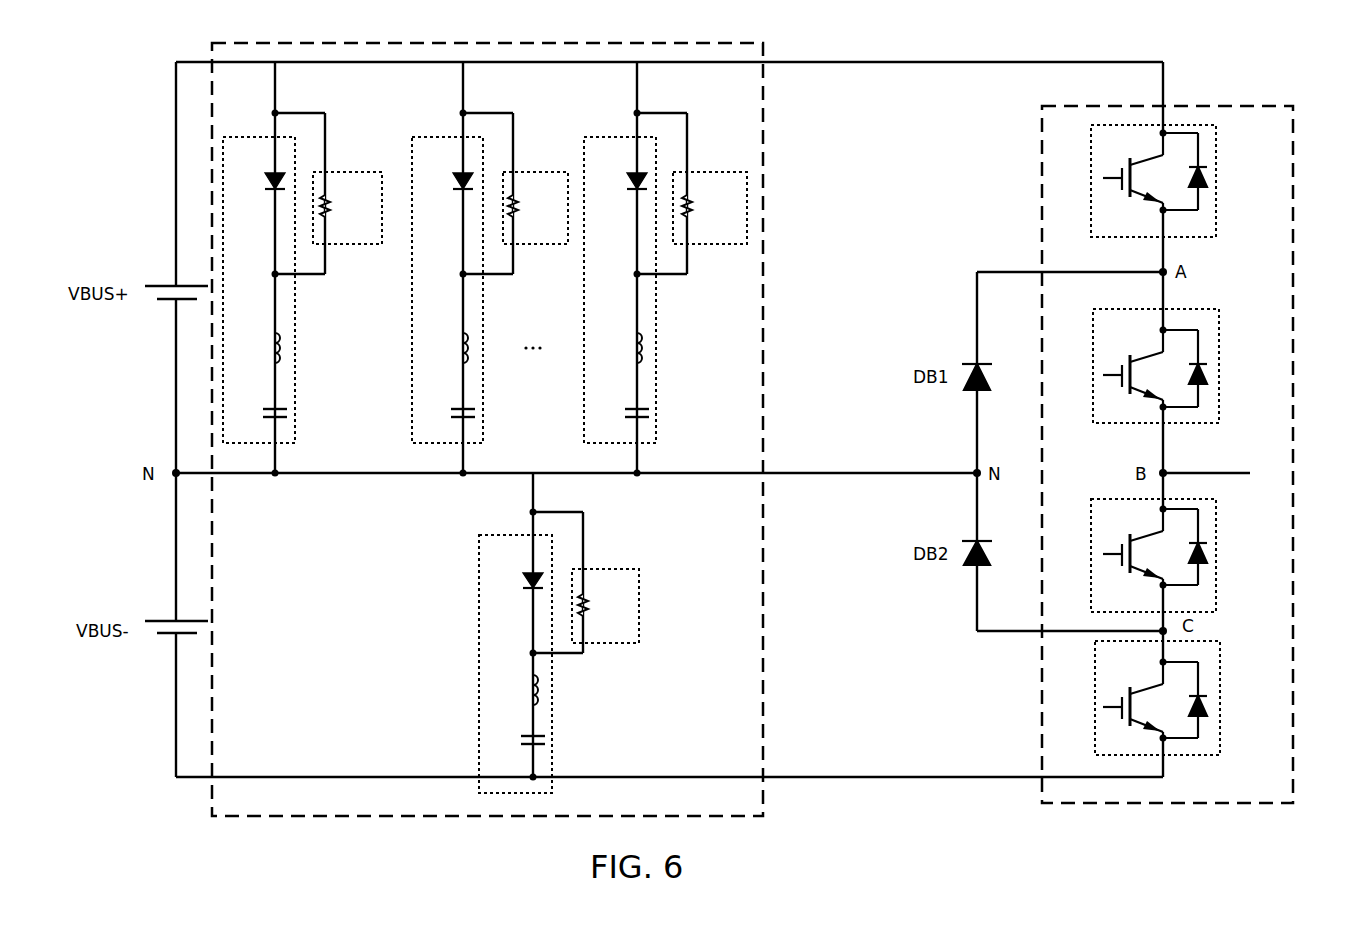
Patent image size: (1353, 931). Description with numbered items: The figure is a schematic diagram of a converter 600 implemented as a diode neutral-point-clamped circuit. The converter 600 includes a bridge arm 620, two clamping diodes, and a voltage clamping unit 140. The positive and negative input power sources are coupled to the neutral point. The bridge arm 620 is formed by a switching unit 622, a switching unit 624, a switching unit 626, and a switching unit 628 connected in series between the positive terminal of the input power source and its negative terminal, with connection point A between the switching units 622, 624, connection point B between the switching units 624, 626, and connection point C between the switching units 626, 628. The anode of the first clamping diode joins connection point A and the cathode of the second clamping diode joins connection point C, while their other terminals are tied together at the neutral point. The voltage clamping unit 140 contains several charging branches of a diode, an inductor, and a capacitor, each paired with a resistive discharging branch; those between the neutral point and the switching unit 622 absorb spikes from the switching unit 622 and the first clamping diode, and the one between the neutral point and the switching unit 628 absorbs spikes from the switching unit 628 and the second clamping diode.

The converter 600 is at (1003, 47).
The voltage clamping unit 140 is at (763, 633).
The bridge arm 620 is at (1293, 653).
The switching unit 622 is at (1218, 166).
The switching unit 624 is at (1222, 345).
The switching unit 626 is at (1216, 536).
The switching unit 628 is at (1222, 677).